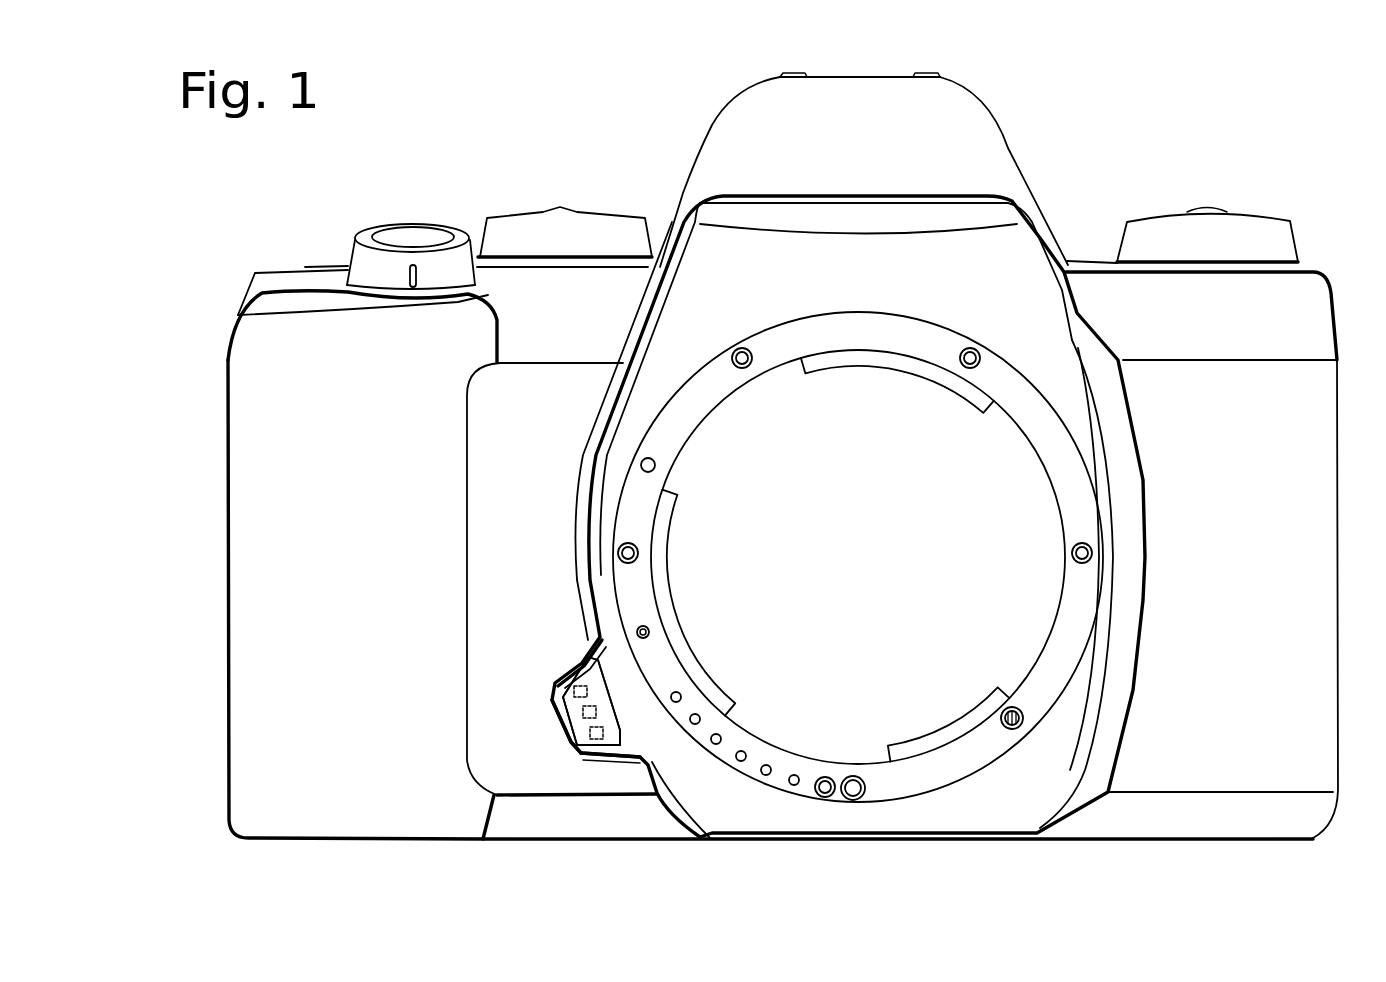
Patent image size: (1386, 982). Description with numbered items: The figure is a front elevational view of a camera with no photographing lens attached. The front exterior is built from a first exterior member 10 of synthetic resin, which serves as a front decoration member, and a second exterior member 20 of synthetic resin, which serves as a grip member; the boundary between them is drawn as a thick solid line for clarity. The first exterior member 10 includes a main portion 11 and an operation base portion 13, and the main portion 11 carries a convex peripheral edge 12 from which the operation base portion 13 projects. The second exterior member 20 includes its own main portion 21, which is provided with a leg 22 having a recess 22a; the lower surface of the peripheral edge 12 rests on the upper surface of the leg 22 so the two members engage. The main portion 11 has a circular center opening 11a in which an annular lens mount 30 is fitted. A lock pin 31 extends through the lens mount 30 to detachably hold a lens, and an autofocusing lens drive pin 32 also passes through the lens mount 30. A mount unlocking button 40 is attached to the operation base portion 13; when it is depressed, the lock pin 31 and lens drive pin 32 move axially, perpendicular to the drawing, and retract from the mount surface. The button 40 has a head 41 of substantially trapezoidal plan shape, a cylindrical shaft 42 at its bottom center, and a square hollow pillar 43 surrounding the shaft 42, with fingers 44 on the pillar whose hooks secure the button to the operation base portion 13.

The first exterior member 10 is at (628, 341).
The main portion 11 is at (695, 267).
The circular center opening 11a is at (812, 324).
The peripheral edge 12 is at (652, 297).
The operation base portion 13 is at (582, 655).
The second exterior member 20 is at (545, 306).
The main portion 21 is at (542, 380).
The leg 22 is at (598, 465).
The recess 22a is at (570, 680).
The lens mount 30 is at (762, 327).
The lock pin 31 is at (650, 631).
The autofocusing lens drive pin 32 is at (1020, 712).
The mount unlocking button 40 is at (560, 722).
The head 41 is at (549, 712).
The cylindrical shaft 42 is at (567, 747).
The square hollow pillar 43 is at (575, 694).
The fingers 44 is at (600, 758).